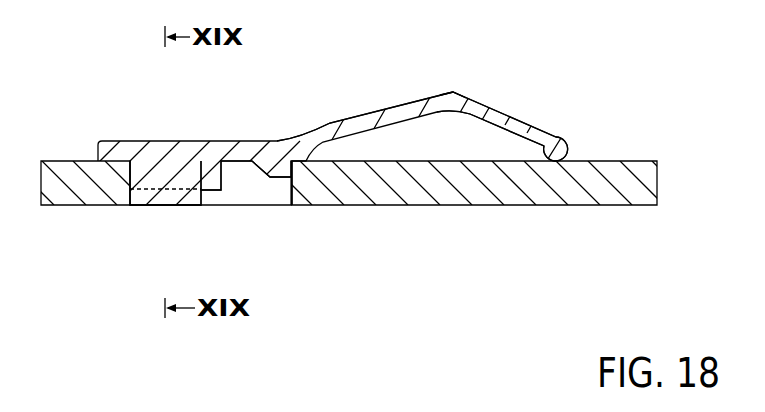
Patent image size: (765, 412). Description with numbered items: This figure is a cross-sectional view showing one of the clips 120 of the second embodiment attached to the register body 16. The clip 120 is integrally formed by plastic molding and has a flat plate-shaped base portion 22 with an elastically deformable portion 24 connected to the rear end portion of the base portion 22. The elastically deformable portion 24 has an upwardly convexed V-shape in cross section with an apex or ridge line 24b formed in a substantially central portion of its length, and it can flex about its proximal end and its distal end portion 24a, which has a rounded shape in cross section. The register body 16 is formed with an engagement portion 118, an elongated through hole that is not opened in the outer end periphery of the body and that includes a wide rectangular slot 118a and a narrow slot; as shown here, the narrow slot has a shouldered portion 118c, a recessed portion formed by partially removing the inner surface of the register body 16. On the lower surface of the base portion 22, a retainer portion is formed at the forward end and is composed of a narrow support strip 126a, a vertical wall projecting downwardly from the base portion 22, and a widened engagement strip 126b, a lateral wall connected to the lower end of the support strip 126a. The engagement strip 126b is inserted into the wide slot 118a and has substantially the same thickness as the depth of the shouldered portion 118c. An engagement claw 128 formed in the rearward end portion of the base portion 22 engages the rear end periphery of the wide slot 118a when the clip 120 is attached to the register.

The register body 16 is at (613, 178).
The base portion 22 is at (172, 141).
The elastically deformable portion 24 is at (503, 112).
The distal end portion 24a is at (560, 152).
The apex or ridge line 24b is at (453, 90).
The engagement portion 118 is at (289, 206).
The wide rectangular slot 118a is at (238, 182).
The shouldered portion 118c is at (212, 193).
The clip 120 is at (325, 104).
The support strip 126a is at (138, 178).
The engagement strip 126b is at (152, 196).
The engagement claw 128 is at (278, 168).